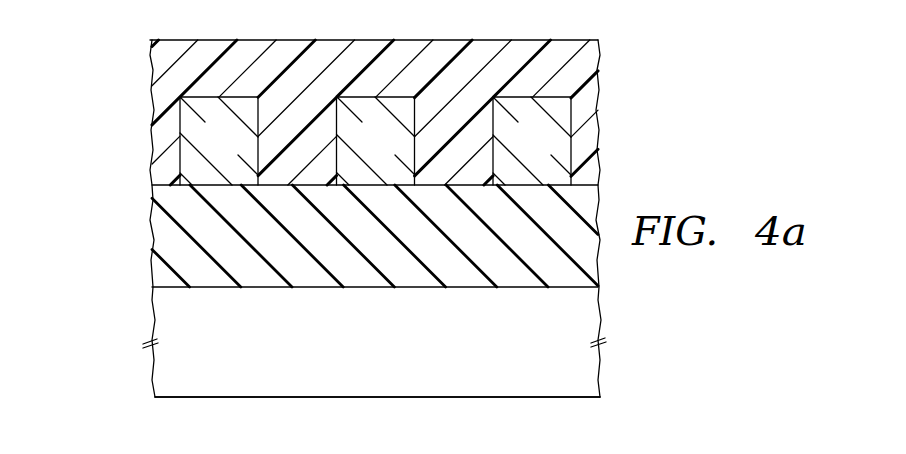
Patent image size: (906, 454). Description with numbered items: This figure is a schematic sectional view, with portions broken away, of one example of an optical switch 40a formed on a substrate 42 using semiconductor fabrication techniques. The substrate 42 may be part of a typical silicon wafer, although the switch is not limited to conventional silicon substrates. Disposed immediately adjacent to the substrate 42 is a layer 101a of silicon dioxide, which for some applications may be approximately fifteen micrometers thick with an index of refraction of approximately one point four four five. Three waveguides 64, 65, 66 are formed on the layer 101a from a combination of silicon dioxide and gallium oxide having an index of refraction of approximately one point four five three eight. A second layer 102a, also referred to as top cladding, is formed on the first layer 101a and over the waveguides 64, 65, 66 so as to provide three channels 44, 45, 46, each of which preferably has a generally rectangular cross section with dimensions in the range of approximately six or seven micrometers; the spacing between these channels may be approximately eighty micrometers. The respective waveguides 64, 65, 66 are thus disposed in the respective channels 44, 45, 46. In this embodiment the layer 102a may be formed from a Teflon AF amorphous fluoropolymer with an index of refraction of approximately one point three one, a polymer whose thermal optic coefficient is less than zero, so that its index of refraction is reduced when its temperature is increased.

The optical switch 40a is at (114, 195).
The substrate 42 is at (152, 374).
The layer of silicon dioxide 101a is at (155, 238).
The second layer 102a is at (153, 52).
The channel 44 is at (180, 117).
The channel 45 is at (337, 117).
The channel 46 is at (494, 117).
The waveguide 64 is at (234, 152).
The waveguide 65 is at (390, 152).
The waveguide 66 is at (547, 152).